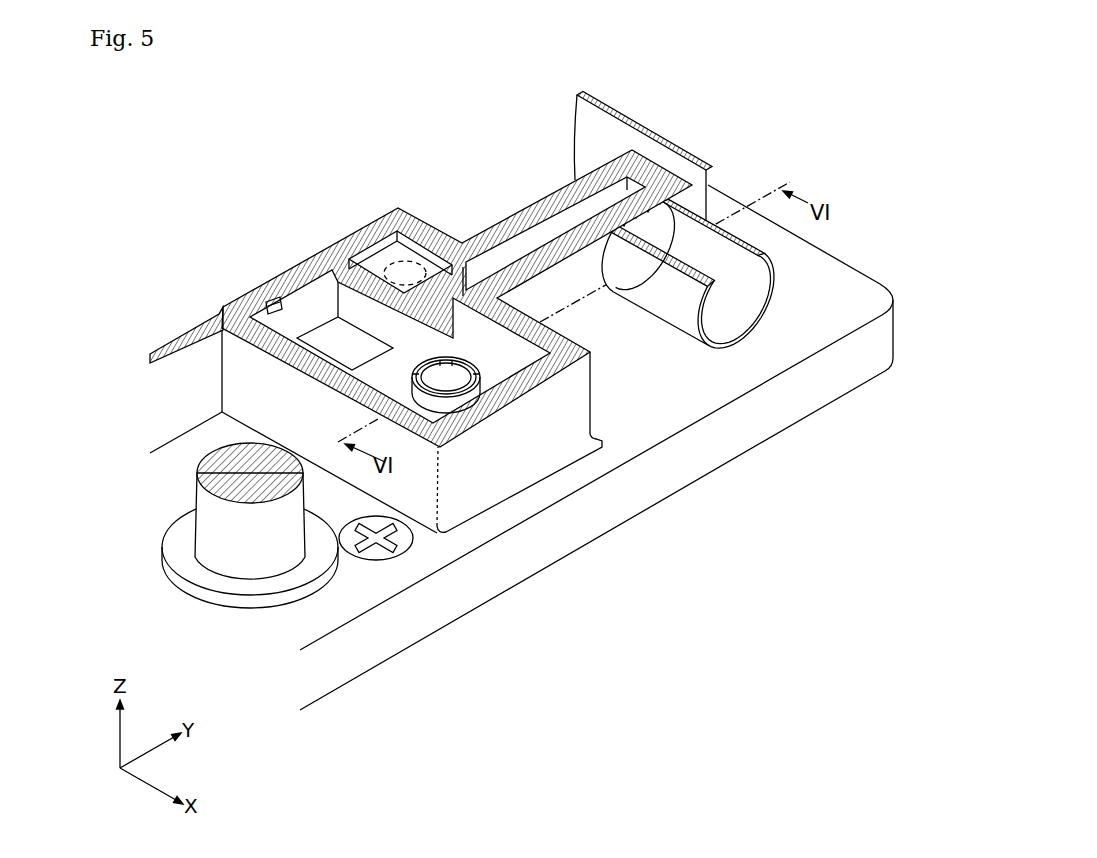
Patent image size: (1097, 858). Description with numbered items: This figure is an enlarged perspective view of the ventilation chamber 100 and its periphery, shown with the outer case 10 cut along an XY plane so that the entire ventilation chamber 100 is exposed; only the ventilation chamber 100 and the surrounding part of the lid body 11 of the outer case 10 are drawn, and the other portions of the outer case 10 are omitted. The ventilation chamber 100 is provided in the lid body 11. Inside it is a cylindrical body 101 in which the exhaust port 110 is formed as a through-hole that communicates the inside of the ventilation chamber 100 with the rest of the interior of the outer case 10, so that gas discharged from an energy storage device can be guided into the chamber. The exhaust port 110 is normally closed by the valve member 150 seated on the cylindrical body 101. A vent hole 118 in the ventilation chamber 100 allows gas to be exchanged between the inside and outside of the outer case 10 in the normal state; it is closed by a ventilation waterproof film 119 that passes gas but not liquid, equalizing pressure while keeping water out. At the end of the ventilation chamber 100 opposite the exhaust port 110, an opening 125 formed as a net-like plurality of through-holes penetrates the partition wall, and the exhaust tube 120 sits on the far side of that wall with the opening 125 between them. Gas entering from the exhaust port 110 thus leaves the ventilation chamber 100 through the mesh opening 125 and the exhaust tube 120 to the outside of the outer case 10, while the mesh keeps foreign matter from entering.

The outer case 10 is at (861, 240).
The lid body 11 is at (740, 197).
The ventilation chamber 100 is at (421, 322).
The cylindrical body 101 is at (430, 352).
The exhaust port 110 is at (430, 352).
The vent hole 118 is at (394, 257).
The ventilation waterproof film 119 is at (434, 276).
The exhaust tube 120 is at (688, 312).
The opening 125 is at (637, 223).
The valve member 150 is at (470, 392).